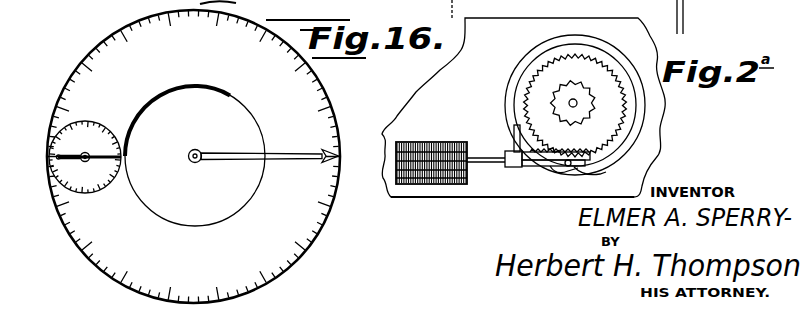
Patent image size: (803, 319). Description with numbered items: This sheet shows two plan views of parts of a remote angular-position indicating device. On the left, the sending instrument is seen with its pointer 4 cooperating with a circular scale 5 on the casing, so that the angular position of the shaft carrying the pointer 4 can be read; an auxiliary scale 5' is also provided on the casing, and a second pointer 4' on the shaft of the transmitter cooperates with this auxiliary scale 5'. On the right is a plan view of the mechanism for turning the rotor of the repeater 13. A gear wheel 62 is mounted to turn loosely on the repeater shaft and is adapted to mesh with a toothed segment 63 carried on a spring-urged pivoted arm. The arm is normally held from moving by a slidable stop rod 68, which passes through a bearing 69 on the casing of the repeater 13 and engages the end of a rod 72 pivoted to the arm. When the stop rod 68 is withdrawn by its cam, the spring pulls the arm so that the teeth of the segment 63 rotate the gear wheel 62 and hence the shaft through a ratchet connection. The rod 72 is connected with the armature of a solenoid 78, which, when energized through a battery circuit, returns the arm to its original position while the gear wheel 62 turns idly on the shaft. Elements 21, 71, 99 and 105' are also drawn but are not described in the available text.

In FIG. 16, the pointer 4 is at (232, 156).
In FIG. 16, the scale 5 is at (205, 156).
In FIG. 16, the pointer 4' is at (73, 147).
In FIG. 16, the auxiliary scale 5' is at (85, 172).
In FIG. 2A, the repeater 13 is at (600, 61).
In FIG. 2A, the pinion 21 is at (577, 62).
In FIG. 2A, the gear wheel 62 is at (529, 68).
In FIG. 2A, the toothed segment 63 is at (552, 166).
In FIG. 2A, the stop rod 68 is at (569, 161).
In FIG. 2A, the bearing 69 is at (588, 173).
In FIG. 2A, the link 71 is at (571, 171).
In FIG. 2A, the rod 72 is at (484, 158).
In FIG. 2A, the solenoid 78 is at (431, 152).
In FIG. 2A, the conductor 99 is at (677, 18).
In FIG. 2A, the lead 105' is at (710, 12).